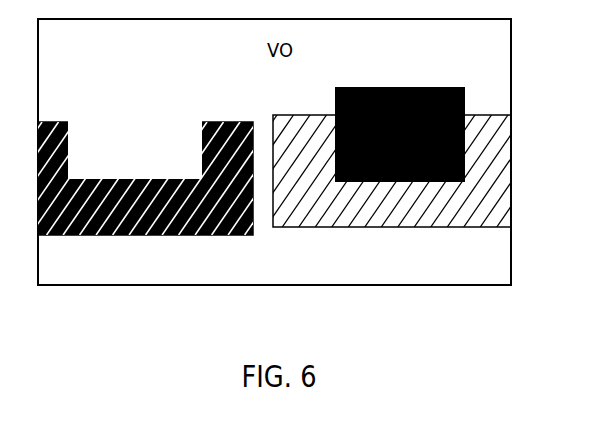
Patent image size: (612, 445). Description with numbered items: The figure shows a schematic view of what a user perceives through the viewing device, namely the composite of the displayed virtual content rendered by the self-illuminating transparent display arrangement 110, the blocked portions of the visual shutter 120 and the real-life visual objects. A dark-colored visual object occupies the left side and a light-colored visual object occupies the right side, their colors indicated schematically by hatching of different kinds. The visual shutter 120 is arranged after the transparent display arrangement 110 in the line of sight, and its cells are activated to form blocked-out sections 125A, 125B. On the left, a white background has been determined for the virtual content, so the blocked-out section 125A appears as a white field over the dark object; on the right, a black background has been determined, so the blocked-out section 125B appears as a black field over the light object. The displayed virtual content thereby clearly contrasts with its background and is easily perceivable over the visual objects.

The transparent display arrangement 110 is at (161, 130).
The visual shutter 120 is at (387, 126).
The blocked-out section 125A is at (160, 235).
The blocked-out section 125B is at (398, 182).